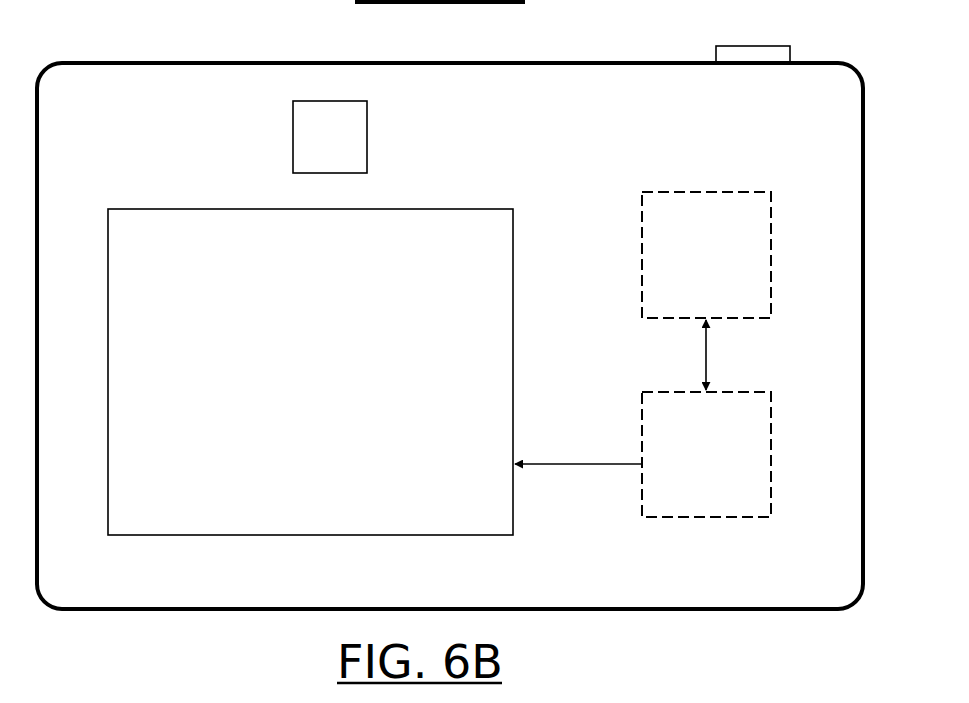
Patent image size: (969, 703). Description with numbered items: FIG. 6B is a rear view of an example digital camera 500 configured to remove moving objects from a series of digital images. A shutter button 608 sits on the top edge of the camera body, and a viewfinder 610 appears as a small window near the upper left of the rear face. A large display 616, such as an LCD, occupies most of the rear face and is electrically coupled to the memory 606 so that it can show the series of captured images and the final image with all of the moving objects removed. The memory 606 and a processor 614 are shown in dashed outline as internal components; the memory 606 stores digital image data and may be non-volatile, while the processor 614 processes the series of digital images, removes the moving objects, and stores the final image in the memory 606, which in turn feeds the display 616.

The portable electronic device 500 is at (450, 336).
The memory 606 is at (706, 454).
The shutter button 608 is at (750, 41).
The viewfinder 610 is at (330, 137).
The processor 614 is at (706, 255).
The display 616 is at (310, 372).